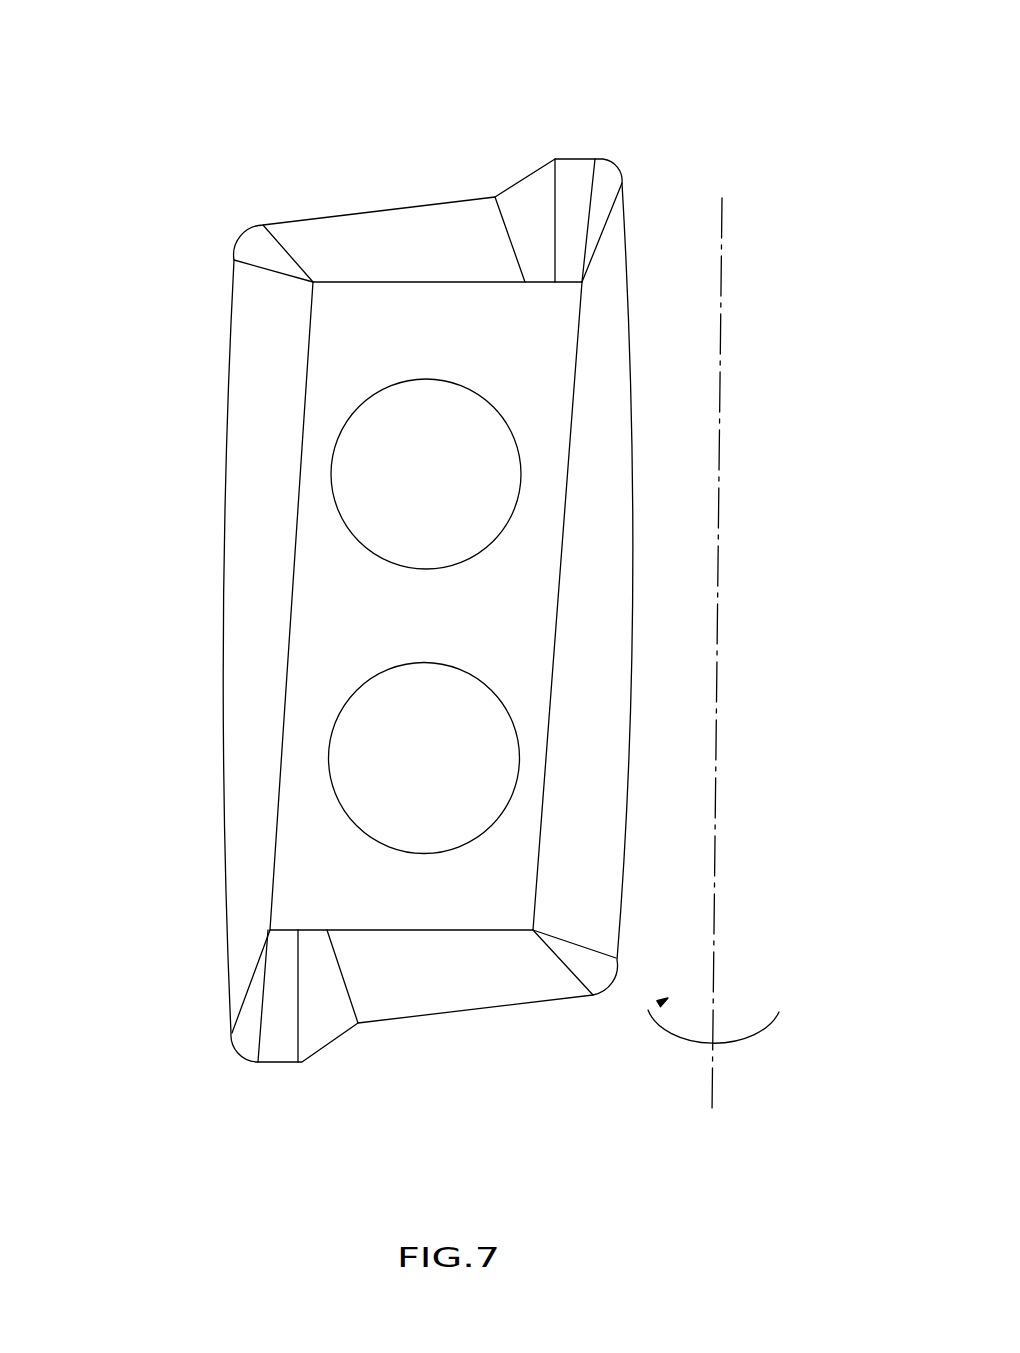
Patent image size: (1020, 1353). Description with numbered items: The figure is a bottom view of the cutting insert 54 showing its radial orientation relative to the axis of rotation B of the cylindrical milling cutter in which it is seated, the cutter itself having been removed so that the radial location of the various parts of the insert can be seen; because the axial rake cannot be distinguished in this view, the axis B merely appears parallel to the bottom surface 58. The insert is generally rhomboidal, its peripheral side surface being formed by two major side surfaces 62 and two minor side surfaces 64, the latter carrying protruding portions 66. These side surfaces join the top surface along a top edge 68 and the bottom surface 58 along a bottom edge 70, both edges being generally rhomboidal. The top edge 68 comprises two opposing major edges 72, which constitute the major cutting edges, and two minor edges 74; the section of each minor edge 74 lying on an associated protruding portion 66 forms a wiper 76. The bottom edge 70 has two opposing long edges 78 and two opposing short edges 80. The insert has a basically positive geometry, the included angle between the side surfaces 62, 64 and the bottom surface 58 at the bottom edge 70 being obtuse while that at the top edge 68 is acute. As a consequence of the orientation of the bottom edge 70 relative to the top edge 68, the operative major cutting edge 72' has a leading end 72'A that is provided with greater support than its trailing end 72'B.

The cutting insert 54 is at (270, 100).
The bottom surface 58 is at (370, 310).
The major side surfaces 62 is at (248, 768).
The minor side surfaces 64 is at (310, 245).
The protruding portions 66 is at (553, 150).
The top edge 68 is at (230, 330).
The bottom edge 70 is at (582, 328).
The major edges 72 is at (672, 588).
The operative major cutting edge 72' is at (181, 515).
The leading end 72'A is at (174, 953).
The trailing end 72'B is at (190, 249).
The minor edges 74 is at (418, 198).
The wiper 76 is at (582, 155).
The long edges 78 is at (292, 602).
The short edges 80 is at (470, 282).
The axis of rotation B is at (721, 235).